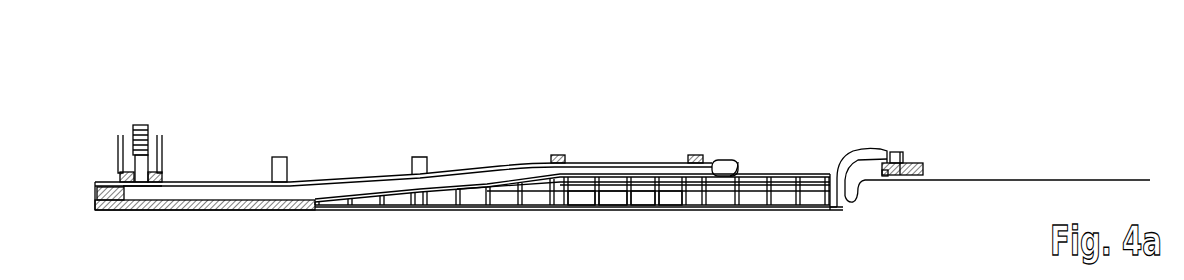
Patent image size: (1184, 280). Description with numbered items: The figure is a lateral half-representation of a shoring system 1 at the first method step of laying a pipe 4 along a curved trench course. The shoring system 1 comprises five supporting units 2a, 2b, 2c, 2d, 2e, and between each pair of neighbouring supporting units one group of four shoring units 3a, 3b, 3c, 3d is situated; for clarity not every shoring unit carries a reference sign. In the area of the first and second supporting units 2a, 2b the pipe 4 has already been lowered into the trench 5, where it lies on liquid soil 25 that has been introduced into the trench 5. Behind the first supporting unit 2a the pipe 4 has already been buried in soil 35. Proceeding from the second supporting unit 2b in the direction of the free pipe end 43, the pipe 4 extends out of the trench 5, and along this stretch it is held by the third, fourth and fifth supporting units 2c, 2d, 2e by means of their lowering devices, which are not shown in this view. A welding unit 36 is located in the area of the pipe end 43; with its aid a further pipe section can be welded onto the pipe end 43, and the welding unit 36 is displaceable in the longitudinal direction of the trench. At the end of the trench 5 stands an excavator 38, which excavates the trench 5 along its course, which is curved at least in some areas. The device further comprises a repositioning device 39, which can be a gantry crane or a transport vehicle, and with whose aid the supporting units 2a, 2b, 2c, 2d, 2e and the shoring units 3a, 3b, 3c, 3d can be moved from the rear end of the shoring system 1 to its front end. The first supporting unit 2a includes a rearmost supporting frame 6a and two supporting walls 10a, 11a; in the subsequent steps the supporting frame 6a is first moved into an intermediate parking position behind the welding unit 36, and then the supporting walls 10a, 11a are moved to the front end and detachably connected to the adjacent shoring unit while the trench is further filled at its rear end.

The shoring system 1 is at (846, 95).
The first supporting unit 2a is at (167, 120).
The second supporting unit 2b is at (278, 130).
The third supporting unit 2c is at (419, 127).
The fourth supporting unit 2d is at (563, 121).
The fifth supporting unit 2e is at (702, 117).
The shoring unit 3a is at (567, 230).
The shoring unit 3b is at (603, 228).
The shoring unit 3c is at (648, 231).
The shoring unit 3d is at (682, 230).
The pipe 4 is at (403, 137).
The trench 5 is at (990, 211).
The rearmost supporting frame 6a is at (182, 156).
The supporting wall 10a is at (148, 216).
The supporting wall 11a is at (176, 224).
The liquid soil 25 is at (469, 225).
The soil 35 is at (98, 232).
The welding unit 36 is at (751, 128).
The excavator 38 is at (942, 130).
The repositioning device 39 is at (119, 118).
The free pipe end 43 is at (742, 168).